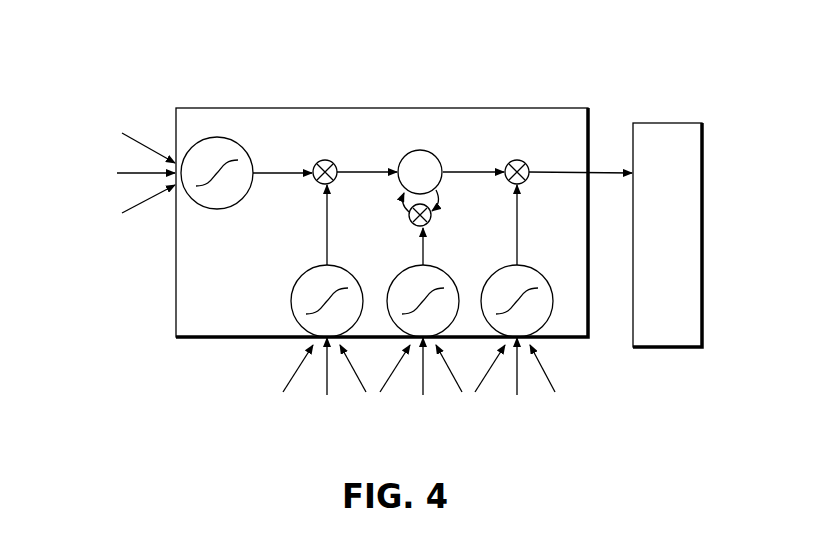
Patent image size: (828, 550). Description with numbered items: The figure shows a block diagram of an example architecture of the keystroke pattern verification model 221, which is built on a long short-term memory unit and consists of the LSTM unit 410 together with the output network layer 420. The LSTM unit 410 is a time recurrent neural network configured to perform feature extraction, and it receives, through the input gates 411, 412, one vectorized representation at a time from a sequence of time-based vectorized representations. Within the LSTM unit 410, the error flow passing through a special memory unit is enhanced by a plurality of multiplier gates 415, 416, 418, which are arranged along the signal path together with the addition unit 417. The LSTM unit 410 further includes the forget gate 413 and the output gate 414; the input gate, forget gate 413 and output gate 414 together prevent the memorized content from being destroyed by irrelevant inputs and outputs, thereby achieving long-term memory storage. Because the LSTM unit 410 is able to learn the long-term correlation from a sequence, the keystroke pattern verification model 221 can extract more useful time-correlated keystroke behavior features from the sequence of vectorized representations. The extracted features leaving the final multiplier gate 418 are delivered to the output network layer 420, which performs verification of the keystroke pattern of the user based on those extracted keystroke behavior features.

The keystroke pattern verification model 221 is at (305, 38).
The LSTM unit 410 is at (303, 108).
The input gate 411 is at (247, 153).
The input gate 412 is at (328, 265).
The forget gate 413 is at (426, 265).
The output gate 414 is at (519, 265).
The multiplier gate 415 is at (333, 161).
The multiplier gate 416 is at (434, 220).
The addition unit 417 is at (432, 151).
The multiplier gate 418 is at (525, 161).
The output network layer 420 is at (675, 123).